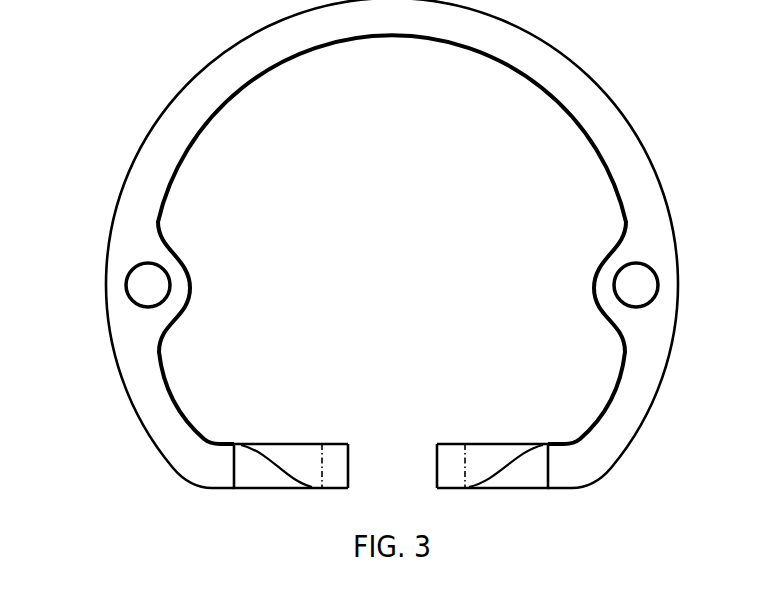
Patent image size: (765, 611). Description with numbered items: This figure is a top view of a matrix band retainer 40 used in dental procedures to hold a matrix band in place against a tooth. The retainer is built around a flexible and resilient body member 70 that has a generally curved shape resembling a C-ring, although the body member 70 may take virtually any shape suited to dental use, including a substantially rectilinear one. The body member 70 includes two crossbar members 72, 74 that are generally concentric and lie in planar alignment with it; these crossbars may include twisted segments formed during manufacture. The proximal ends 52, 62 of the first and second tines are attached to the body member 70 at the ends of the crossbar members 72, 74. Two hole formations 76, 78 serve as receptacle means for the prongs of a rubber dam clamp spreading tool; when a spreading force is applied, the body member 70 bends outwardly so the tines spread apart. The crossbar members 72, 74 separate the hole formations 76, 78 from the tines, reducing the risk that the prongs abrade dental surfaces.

The matrix band retainer 40 is at (84, 265).
The body member 70 is at (222, 75).
The crossbar member 72 is at (272, 436).
The crossbar member 74 is at (501, 429).
The proximal end 52 is at (356, 431).
The proximal end 62 is at (425, 435).
The hole formation 76 is at (152, 284).
The hole formation 78 is at (635, 286).